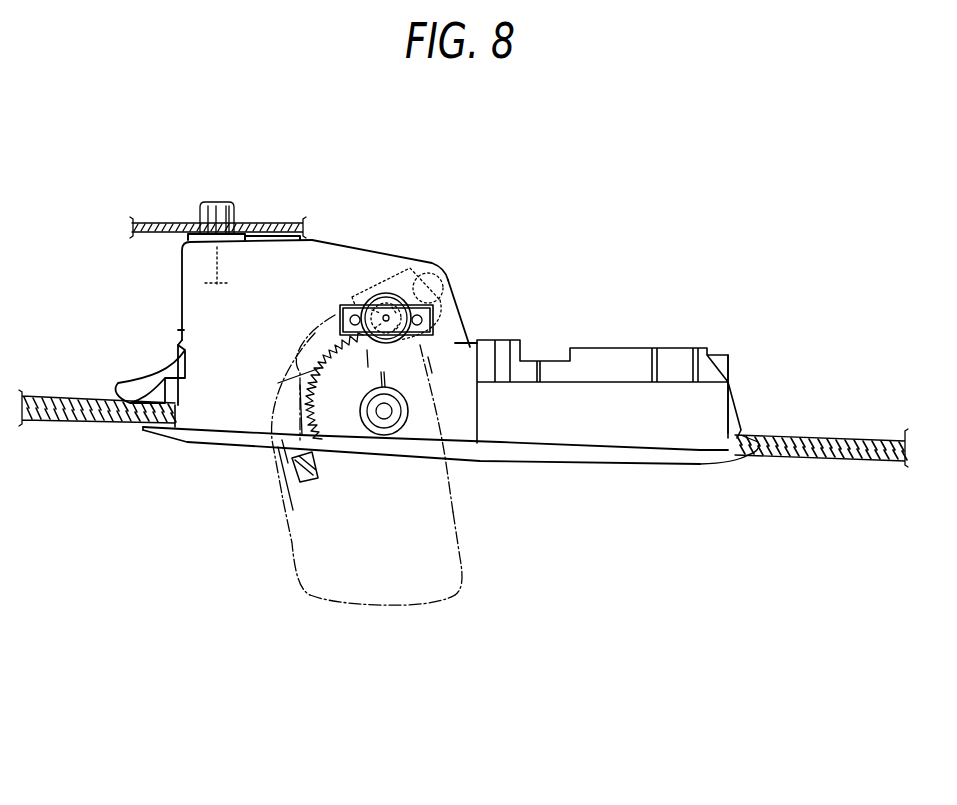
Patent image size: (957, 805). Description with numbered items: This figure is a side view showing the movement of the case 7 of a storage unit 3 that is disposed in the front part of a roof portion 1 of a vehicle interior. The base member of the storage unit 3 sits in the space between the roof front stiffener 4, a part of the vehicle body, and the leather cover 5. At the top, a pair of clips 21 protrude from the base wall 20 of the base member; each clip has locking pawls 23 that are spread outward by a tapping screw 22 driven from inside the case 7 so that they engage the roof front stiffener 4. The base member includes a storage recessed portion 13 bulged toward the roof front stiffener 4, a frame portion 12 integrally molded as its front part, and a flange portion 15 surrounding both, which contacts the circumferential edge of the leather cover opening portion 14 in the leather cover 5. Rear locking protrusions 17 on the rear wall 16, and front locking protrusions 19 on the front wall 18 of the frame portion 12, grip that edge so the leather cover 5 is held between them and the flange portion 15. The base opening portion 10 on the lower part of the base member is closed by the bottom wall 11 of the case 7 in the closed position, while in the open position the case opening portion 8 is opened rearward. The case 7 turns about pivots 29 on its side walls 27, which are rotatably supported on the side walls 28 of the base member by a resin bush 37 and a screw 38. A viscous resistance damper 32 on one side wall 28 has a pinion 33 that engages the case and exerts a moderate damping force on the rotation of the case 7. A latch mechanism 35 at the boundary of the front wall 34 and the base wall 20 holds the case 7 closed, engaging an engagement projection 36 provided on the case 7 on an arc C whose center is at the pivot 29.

The roof portion 1 is at (812, 462).
The storage unit 3 is at (213, 457).
The roof front stiffener 4 is at (272, 229).
The leather cover 5 is at (67, 425).
The case 7 is at (463, 566).
The case opening portion 8 is at (292, 543).
The base opening portion 10 is at (183, 443).
The bottom wall 11 is at (457, 519).
The frame portion 12 is at (615, 387).
The storage recessed portion 13 is at (181, 292).
The leather cover opening portion 14 is at (723, 450).
The flange portion 15 is at (747, 467).
The rear wall 16 is at (178, 330).
The rear locking protrusions 17 is at (133, 377).
The front wall 18 is at (729, 383).
The front locking protrusions 19 is at (742, 418).
The base wall 20 is at (318, 237).
The clips 21 is at (200, 204).
The tapping screw 22 is at (230, 280).
The locking pawls 23 is at (218, 217).
The side walls 27 is at (330, 590).
The side walls 28 is at (412, 263).
The pivots 29 is at (385, 415).
The viscous resistance damper 32 is at (435, 308).
The pinion 33 is at (450, 328).
The front wall 34 is at (446, 290).
The latch mechanism 35 is at (386, 292).
The engagement projection 36 is at (273, 463).
The resin bush 37 is at (429, 541).
The screw 38 is at (384, 411).
The arc C is at (315, 333).